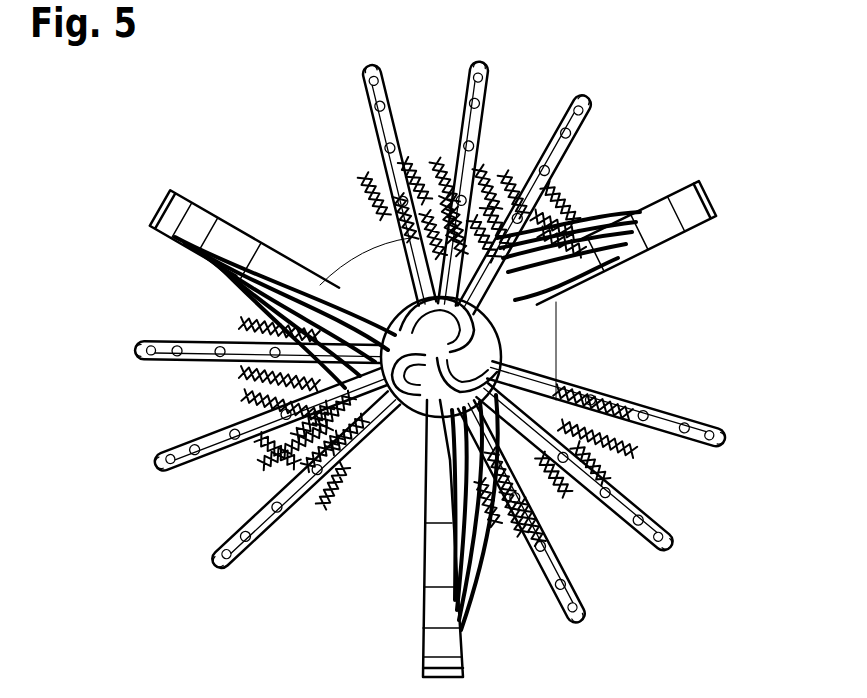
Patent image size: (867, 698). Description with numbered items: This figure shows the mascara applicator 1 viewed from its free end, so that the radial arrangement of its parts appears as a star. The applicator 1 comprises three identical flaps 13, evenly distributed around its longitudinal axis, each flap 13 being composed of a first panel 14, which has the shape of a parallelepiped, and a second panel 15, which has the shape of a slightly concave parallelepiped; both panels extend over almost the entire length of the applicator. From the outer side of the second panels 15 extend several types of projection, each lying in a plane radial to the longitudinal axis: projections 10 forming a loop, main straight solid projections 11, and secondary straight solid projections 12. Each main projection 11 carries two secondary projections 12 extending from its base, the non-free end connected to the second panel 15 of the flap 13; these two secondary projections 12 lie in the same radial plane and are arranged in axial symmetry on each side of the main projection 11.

The mascara applicator 1 is at (734, 120).
The projections forming a loop 10 is at (158, 203).
The main straight solid projections 11 is at (365, 68).
The secondary straight solid projections 12 is at (367, 182).
The flaps 13 is at (316, 147).
The first panel 14 is at (372, 305).
The second panel 15 is at (355, 335).